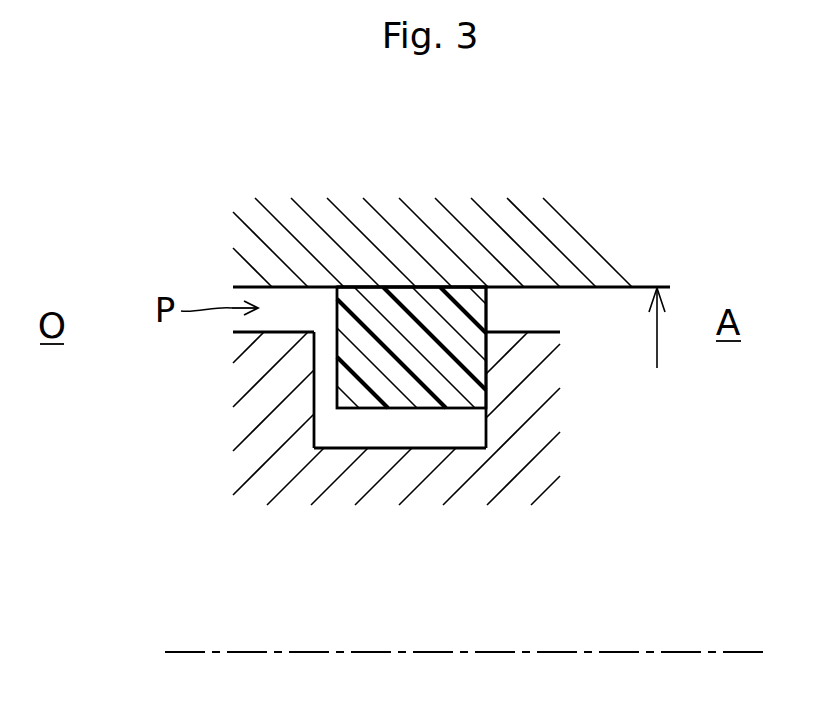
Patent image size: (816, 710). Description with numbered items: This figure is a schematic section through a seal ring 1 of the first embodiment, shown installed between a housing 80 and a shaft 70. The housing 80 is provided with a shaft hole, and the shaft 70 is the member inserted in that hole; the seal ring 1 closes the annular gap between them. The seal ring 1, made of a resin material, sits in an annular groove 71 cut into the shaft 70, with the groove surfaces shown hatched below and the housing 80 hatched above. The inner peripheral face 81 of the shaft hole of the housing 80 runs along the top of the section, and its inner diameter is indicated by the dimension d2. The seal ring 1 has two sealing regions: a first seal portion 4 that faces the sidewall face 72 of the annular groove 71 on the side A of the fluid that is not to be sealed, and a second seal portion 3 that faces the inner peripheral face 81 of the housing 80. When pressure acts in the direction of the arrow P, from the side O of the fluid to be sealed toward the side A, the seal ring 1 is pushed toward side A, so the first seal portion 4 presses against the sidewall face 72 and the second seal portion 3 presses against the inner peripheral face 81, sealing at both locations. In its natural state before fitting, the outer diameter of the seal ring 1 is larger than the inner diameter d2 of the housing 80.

The seal ring 1 is at (454, 319).
The second seal portion 3 is at (376, 287).
The first seal portion 4 is at (487, 363).
The shaft 70 is at (350, 462).
The annular groove 71 is at (323, 427).
The sidewall face 72 is at (484, 430).
The housing 80 is at (510, 263).
The inner peripheral face 81 is at (572, 287).
The inner diameter of the housing d2 is at (655, 350).